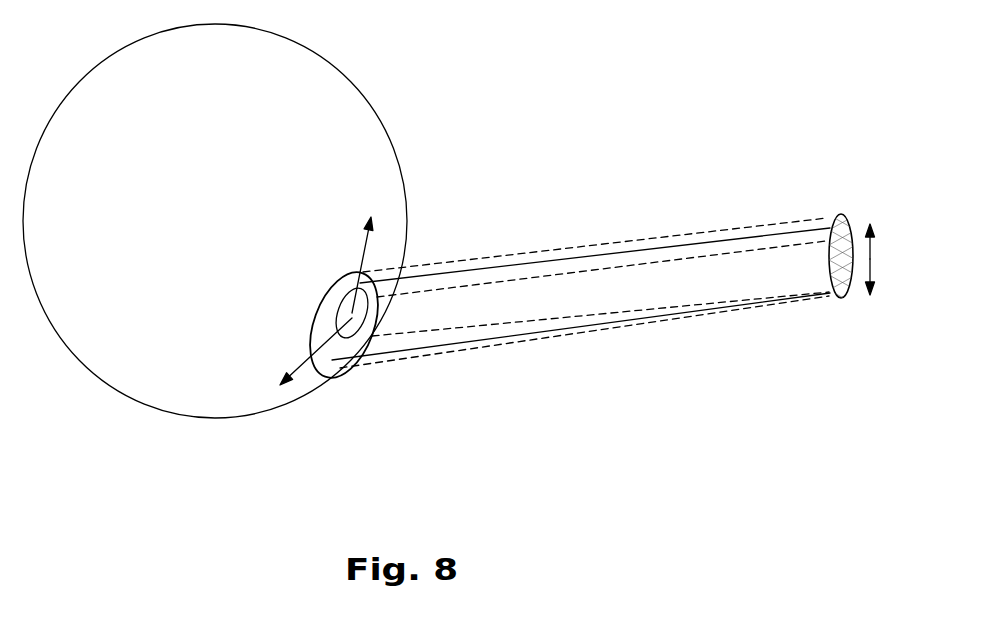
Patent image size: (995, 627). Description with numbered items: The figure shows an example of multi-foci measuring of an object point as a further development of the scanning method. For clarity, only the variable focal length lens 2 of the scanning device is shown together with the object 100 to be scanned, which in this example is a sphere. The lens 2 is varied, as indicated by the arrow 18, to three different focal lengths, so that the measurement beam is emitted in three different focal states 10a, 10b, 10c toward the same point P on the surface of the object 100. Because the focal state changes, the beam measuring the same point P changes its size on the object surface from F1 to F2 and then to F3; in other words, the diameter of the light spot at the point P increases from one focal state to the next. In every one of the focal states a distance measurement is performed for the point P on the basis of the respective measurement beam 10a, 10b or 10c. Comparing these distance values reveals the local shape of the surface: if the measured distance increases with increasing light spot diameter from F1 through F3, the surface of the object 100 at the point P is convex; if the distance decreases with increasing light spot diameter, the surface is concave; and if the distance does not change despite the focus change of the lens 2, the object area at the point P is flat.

The object 100 is at (215, 221).
The variable focal length lens 2 is at (830, 209).
The arrow 18 is at (867, 274).
The focal state 10a is at (648, 285).
The focal state 10b is at (501, 263).
The focal state 10c is at (489, 356).
The point P is at (291, 304).
The light spot size F1 is at (318, 265).
The light spot size F2 is at (328, 328).
The light spot size F3 is at (318, 363).